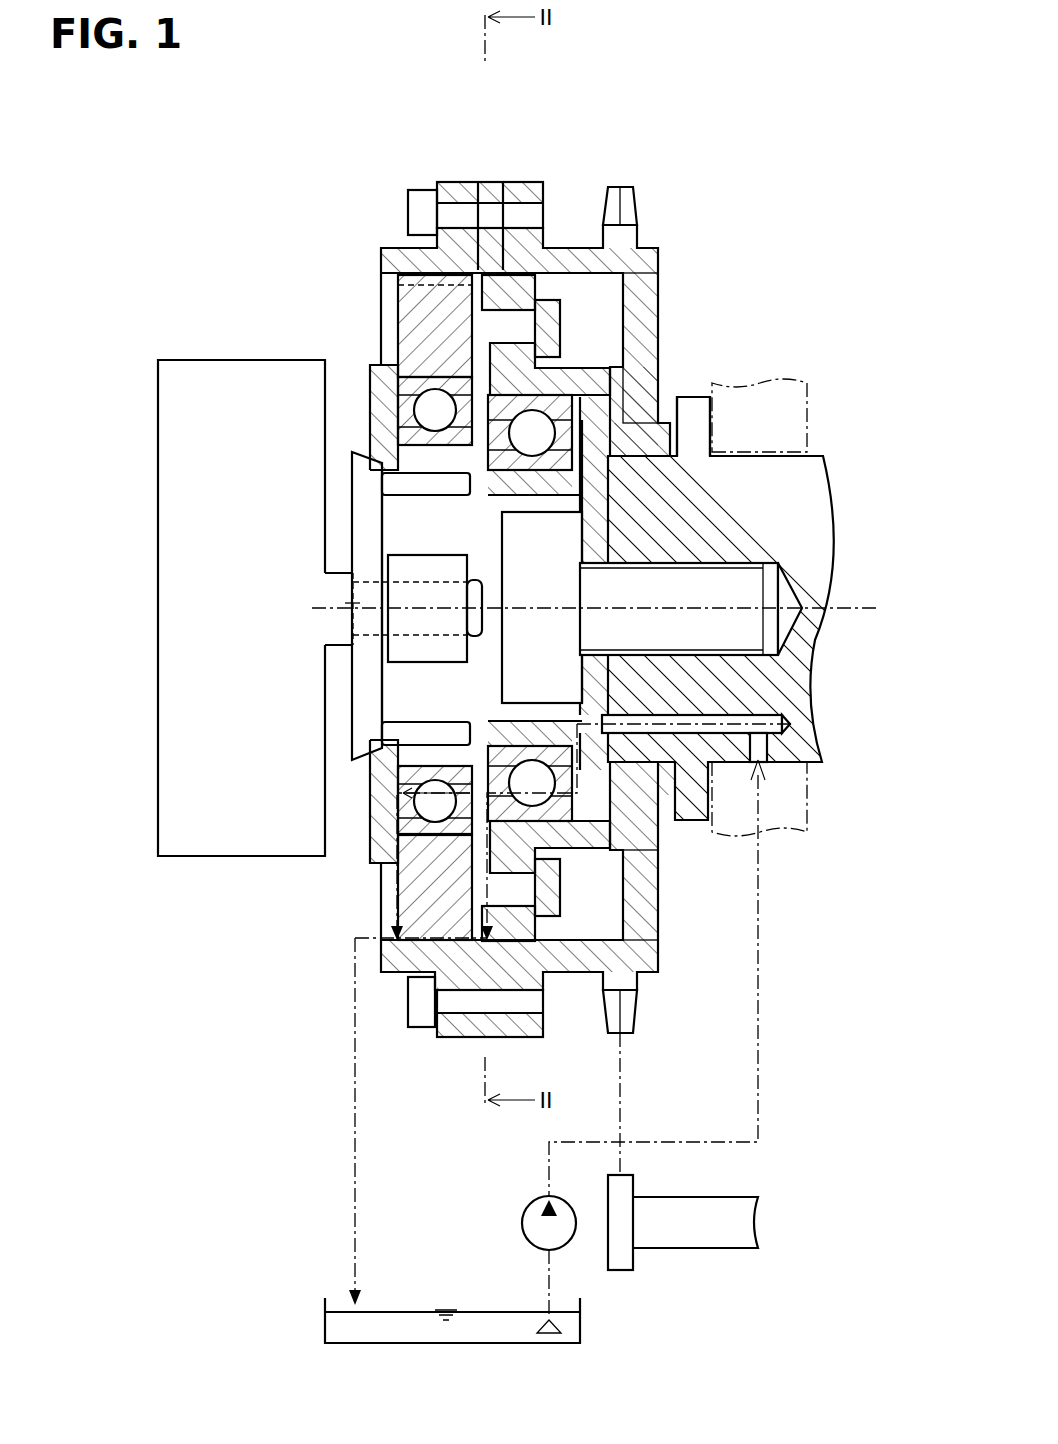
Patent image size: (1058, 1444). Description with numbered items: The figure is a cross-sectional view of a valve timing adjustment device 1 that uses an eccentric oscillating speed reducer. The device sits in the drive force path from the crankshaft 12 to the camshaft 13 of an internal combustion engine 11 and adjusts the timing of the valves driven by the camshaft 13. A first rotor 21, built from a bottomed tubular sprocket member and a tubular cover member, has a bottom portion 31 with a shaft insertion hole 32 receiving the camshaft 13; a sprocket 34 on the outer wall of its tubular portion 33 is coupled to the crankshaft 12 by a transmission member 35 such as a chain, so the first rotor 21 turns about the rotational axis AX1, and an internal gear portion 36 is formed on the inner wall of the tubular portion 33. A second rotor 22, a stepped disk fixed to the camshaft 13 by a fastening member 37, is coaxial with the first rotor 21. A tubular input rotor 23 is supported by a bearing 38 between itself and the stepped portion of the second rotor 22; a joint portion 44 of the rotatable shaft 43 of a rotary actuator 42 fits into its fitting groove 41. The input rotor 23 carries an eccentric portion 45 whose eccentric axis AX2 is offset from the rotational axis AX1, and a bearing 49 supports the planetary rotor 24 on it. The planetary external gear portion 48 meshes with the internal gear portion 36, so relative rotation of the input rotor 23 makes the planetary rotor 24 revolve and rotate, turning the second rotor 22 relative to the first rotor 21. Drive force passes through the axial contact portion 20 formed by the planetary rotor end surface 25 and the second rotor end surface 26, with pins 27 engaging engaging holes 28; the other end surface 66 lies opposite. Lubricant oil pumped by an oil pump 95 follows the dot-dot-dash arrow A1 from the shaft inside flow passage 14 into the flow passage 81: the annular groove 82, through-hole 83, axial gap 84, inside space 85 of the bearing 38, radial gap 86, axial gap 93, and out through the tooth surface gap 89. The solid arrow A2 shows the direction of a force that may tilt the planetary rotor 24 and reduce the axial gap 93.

The valve timing adjustment device 1 is at (327, 180).
The internal combustion engine 11 is at (812, 383).
The crankshaft 12 is at (740, 1197).
The camshaft 13 is at (808, 530).
The shaft inside flow passage 14 is at (740, 750).
The axial contact portion 20 is at (527, 115).
The first rotor 21 is at (660, 246).
The second rotor 22 is at (733, 392).
The input rotor 23 is at (400, 818).
The planetary rotor 24 is at (425, 330).
The planetary rotor end surface 25 is at (503, 300).
The second rotor end surface 26 is at (470, 270).
The pins 27 is at (545, 315).
The engaging holes 28 is at (550, 322).
The bottom portion 31 is at (645, 348).
The shaft insertion hole 32 is at (700, 487).
The tubular portion 33 is at (595, 975).
The sprocket 34 is at (625, 205).
The transmission member 35 is at (628, 1095).
The internal gear portion 36 is at (385, 280).
The fastening member 37 is at (740, 633).
The bearing 38 is at (640, 930).
The fitting groove 41 is at (440, 592).
The rotary actuator 42 is at (178, 360).
The rotatable shaft 43 is at (333, 645).
The joint portion 44 is at (407, 655).
The eccentric portion 45 is at (372, 462).
The planetary external gear portion 48 is at (416, 283).
The bearing 49 is at (400, 800).
The other end surface 66 is at (400, 845).
The flow passage 81 is at (606, 744).
The annular groove 82 is at (615, 730).
The through-hole 83 is at (610, 700).
The axial gap 84 is at (620, 835).
The inside space 85 is at (503, 798).
The radial gap 86 is at (420, 865).
The tooth surface gap 89 is at (400, 945).
The axial gap 93 is at (382, 947).
The oil pump 95 is at (522, 1222).
The dot-dot-dash arrow A1 is at (765, 945).
The solid arrow A2 is at (543, 598).
The rotational axis AX1 is at (333, 608).
The eccentric axis AX2 is at (357, 603).